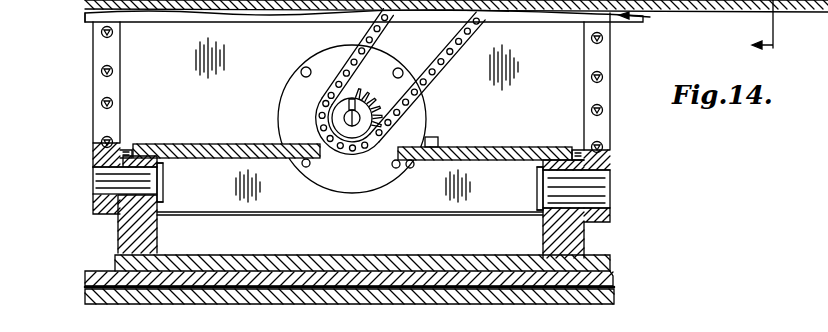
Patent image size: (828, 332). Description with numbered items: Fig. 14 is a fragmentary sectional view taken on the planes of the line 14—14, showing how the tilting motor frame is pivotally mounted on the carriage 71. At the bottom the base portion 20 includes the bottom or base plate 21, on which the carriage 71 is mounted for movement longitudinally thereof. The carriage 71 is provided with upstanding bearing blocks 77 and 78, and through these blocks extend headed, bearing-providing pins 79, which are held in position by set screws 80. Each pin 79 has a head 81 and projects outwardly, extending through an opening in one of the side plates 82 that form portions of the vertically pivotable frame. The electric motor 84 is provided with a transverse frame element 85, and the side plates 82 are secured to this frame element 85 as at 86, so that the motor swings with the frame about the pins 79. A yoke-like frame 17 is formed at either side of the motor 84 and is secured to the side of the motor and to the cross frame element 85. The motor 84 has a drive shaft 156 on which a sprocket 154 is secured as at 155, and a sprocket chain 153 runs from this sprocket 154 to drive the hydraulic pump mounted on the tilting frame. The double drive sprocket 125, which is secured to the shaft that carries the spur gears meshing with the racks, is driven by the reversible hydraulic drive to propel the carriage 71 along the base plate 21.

The section line 14— 14 is at (775, 27).
The yoke-like frame 17 is at (381, 21).
The base portion 20 is at (760, 7).
The base plate 21 is at (717, 13).
The carriage 71 is at (28, 2).
The bearing block 77 is at (576, 243).
The bearing block 78 is at (155, 238).
The bearing-providing pin 79 is at (94, 186).
The set screw 80 is at (126, 152).
The pin head 81 is at (165, 194).
The side plate 82 is at (97, 82).
The electric motor 84 is at (560, 135).
The transverse frame element 85 is at (133, 38).
The fastening 86 is at (106, 106).
The double drive sprocket 125 is at (826, 5).
The sprocket chain 153 is at (438, 80).
The sprocket 154 is at (413, 100).
The securing point 155 is at (385, 117).
The drive shaft 156 is at (345, 124).